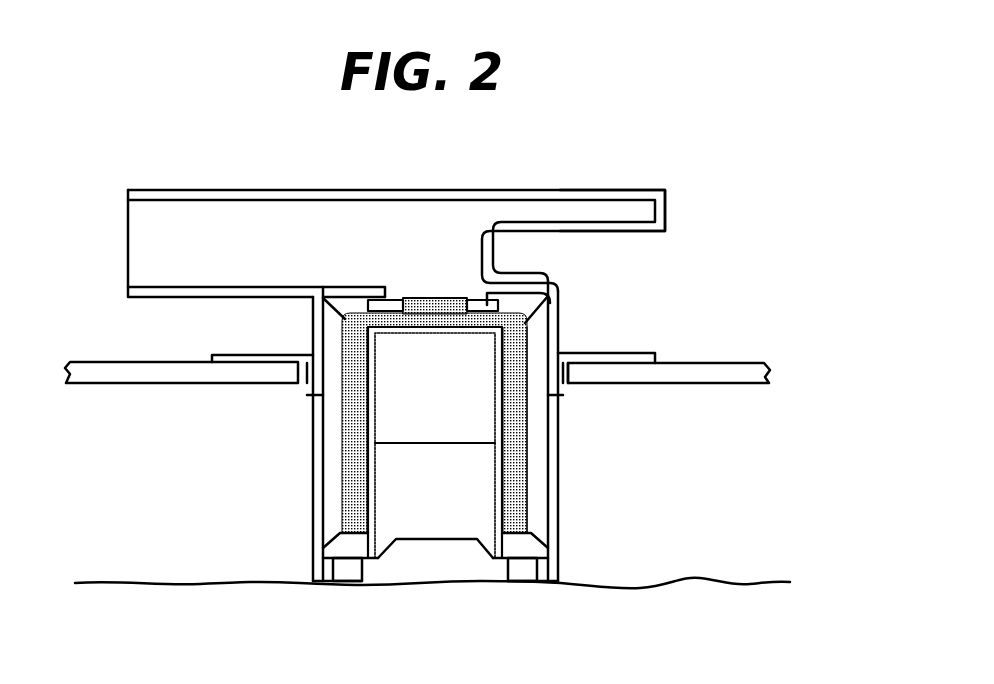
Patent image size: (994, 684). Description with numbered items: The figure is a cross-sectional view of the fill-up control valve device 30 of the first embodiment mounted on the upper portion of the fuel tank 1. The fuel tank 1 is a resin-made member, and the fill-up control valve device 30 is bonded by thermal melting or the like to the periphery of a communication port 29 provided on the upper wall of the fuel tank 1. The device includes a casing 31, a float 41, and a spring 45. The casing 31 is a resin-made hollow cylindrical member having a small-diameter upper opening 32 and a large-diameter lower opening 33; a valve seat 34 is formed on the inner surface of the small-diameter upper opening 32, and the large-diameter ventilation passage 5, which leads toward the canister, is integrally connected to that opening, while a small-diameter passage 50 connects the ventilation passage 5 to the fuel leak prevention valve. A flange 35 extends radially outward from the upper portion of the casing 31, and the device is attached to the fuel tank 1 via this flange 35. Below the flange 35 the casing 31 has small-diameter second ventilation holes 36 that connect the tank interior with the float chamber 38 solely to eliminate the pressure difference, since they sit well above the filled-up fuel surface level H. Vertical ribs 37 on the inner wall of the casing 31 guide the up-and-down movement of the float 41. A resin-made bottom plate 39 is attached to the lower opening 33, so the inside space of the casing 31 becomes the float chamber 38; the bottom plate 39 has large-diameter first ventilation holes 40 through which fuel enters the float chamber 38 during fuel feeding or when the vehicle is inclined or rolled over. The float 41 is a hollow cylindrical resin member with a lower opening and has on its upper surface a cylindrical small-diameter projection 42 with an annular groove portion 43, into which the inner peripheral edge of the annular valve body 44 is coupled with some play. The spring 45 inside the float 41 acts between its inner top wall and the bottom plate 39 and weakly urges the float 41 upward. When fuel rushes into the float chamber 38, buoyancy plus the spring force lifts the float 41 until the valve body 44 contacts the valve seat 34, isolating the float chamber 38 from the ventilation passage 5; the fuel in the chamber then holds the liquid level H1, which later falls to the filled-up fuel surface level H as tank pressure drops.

The fuel tank 1 is at (740, 383).
The ventilation passage 5 is at (200, 189).
The communication port 29 is at (565, 383).
The fill-up control valve device 30 is at (596, 293).
The casing 31 is at (312, 488).
The small-diameter upper opening 32 is at (441, 292).
The large-diameter lower opening 33 is at (317, 582).
The valve seat 34 is at (481, 298).
The flange 35 is at (633, 352).
The second ventilation holes 36 is at (312, 395).
The vertical ribs 37 is at (340, 432).
The float chamber 38 is at (402, 516).
The bottom plate 39 is at (440, 566).
The first ventilation holes 40 is at (350, 582).
The float 41 is at (540, 502).
The cylindrical small-diameter projection 42 is at (426, 298).
The annular groove portion 43 is at (398, 298).
The valve body 44 is at (497, 303).
The spring 45 is at (540, 541).
The small-diameter passage 50 is at (620, 190).
The filled-up fuel surface level H is at (737, 585).
The liquid level H1 is at (420, 443).